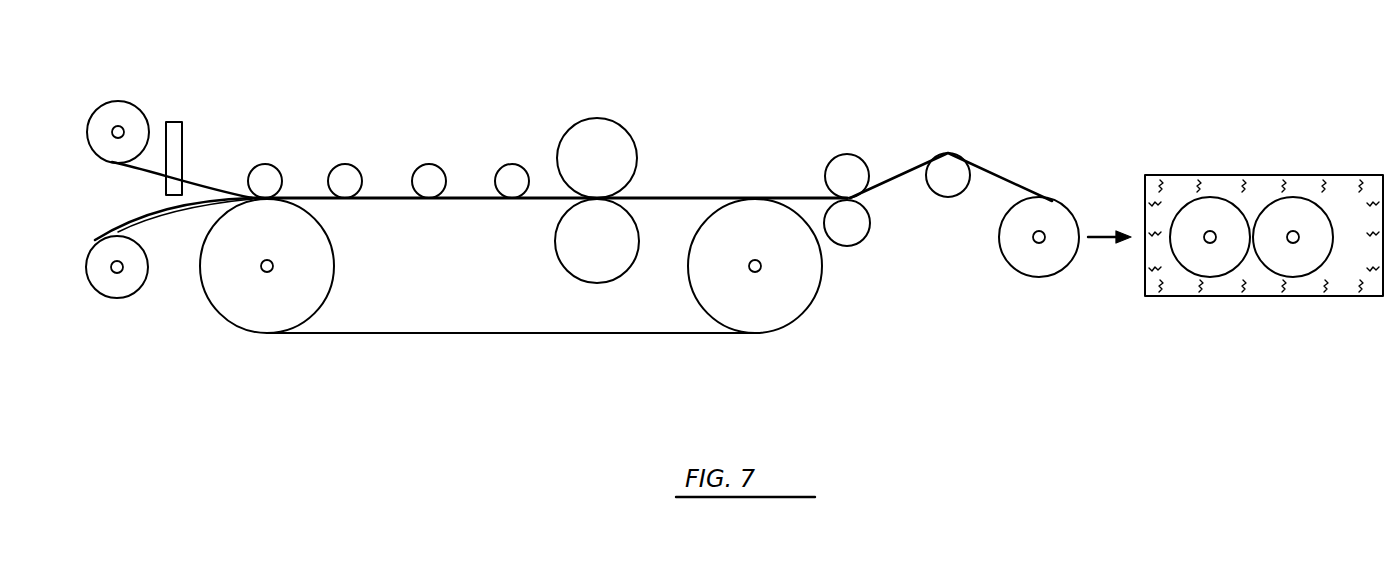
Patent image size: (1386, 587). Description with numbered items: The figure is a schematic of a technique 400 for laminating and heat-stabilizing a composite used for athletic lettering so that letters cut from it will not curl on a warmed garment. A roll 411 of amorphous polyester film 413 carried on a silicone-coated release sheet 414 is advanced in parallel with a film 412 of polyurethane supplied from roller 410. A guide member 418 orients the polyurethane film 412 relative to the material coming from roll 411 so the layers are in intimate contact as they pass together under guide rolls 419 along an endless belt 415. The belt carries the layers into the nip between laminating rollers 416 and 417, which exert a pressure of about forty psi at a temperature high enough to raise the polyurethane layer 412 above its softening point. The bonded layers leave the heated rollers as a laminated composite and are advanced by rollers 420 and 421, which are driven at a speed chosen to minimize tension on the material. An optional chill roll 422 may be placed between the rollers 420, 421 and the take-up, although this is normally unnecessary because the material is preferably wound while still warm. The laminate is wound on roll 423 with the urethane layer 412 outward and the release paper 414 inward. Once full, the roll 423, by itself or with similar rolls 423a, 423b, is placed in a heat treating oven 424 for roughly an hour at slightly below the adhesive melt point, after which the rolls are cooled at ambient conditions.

The technique 400 is at (858, 67).
The roller 410 is at (116, 101).
The roll 411 is at (116, 298).
The polyurethane film 412 is at (118, 170).
The amorphous polyester film 413 is at (146, 212).
The release sheet 414 is at (155, 213).
The endless belt 415 is at (437, 333).
The laminating roller 416 is at (582, 120).
The laminating roller 417 is at (558, 263).
The guide member 418 is at (183, 130).
The guide rolls 419 is at (351, 164).
The roller 420 is at (833, 157).
The roller 421 is at (848, 246).
The chill roll 422 is at (948, 197).
The roll 423 is at (1023, 274).
The roll 423a is at (1192, 272).
The roll 423b is at (1300, 277).
The heat treating oven 424 is at (1258, 175).